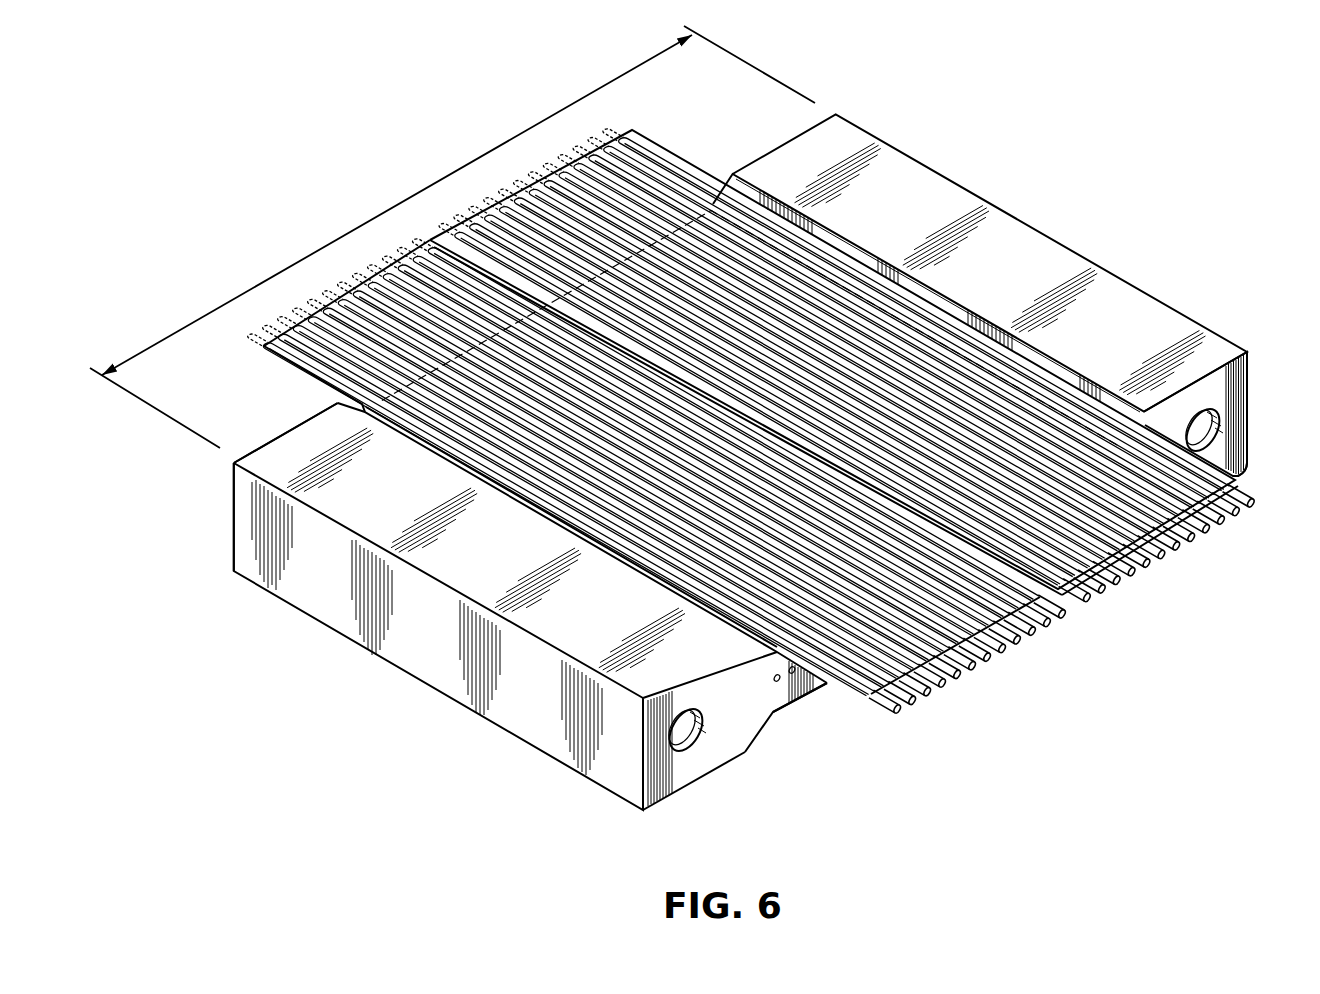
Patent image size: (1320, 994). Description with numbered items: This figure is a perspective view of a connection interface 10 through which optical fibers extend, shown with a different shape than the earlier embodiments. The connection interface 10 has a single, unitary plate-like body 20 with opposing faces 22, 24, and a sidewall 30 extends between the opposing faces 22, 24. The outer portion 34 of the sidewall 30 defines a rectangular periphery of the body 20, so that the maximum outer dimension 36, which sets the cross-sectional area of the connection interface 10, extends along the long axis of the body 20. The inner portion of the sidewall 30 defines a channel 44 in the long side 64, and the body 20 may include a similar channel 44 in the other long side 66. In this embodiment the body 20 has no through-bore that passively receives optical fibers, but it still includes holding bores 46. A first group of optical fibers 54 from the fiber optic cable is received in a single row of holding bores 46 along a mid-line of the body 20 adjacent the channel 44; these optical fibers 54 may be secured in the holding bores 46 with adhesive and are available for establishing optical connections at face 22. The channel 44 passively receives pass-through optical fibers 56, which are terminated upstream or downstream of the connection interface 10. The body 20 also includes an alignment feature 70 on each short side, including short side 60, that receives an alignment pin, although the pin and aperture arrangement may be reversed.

The connection interface 10 is at (1074, 192).
The body 20 is at (1011, 307).
The face 22 is at (712, 768).
The face 24 is at (783, 145).
The sidewall 30 is at (476, 606).
The outer portion 34 is at (245, 563).
The maximum outer dimension 36 is at (415, 196).
The channel 44 is at (843, 236).
The holding bores 46 is at (770, 680).
The optical fibers 54 is at (790, 684).
The pass-through optical fibers 56 is at (1205, 530).
The short side 60 is at (234, 522).
The long side 64 is at (1218, 366).
The long side 66 is at (1240, 476).
The alignment feature 70 is at (703, 720).